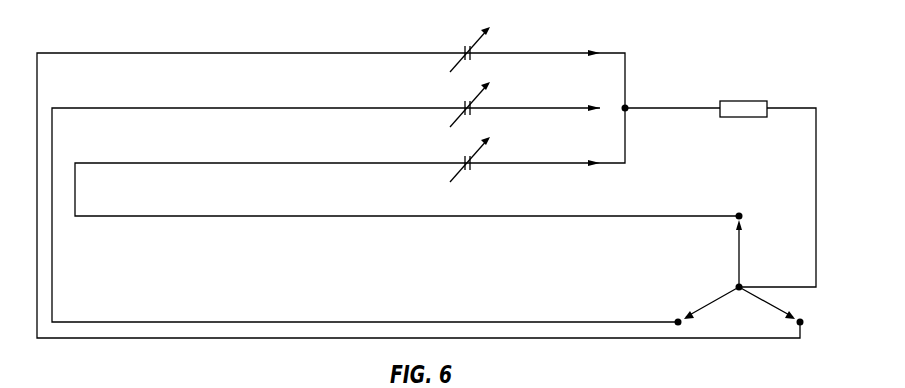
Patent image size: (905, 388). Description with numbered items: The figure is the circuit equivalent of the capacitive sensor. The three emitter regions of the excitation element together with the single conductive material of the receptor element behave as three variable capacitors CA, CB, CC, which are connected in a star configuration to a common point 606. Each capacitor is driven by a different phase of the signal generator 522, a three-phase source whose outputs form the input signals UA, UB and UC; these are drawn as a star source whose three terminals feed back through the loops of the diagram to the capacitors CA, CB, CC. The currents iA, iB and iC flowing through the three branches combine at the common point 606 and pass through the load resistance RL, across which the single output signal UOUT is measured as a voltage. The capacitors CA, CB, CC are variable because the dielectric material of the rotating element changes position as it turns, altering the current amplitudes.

The common point 606 is at (578, 101).
The signal generator 522 is at (713, 281).
The load resistance RL is at (743, 97).
The variable capacitor CA is at (465, 47).
The variable capacitor CB is at (465, 102).
The variable capacitor CC is at (465, 157).